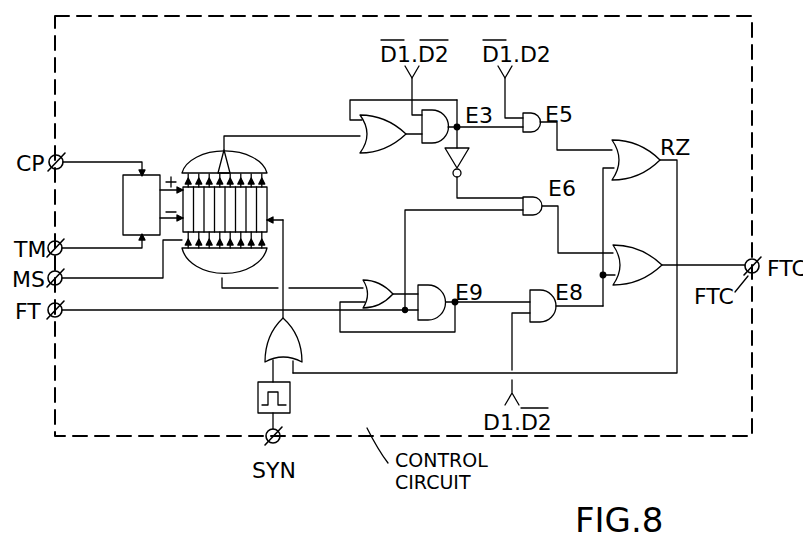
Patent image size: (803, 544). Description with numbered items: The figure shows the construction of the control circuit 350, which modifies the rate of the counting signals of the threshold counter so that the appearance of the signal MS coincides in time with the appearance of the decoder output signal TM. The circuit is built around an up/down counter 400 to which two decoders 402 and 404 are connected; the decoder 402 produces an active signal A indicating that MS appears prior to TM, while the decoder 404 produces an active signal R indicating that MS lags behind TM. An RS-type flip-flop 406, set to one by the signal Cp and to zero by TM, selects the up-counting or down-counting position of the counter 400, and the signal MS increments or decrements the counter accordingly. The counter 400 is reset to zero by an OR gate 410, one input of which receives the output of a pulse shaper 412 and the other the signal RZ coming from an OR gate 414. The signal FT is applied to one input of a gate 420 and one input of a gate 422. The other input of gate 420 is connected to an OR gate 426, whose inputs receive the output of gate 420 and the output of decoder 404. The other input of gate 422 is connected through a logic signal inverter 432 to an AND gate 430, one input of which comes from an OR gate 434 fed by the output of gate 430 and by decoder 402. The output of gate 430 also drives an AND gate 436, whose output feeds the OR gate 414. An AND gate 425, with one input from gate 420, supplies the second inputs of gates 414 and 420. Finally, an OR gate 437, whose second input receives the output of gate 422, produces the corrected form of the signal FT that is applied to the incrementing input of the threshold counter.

The control circuit 350 is at (142, 412).
The up/down counter 400 is at (269, 197).
The decoder 402 is at (206, 157).
The decoder 404 is at (216, 268).
The RS-type flip-flop 406 is at (123, 214).
The OR gate 410 is at (295, 345).
The pulse shaper 412 is at (258, 399).
The OR gate 414 is at (629, 146).
The gate 420 is at (432, 285).
The gate 422 is at (530, 194).
The AND gate 425 is at (549, 322).
The OR gate 426 is at (378, 282).
The AND gate 430 is at (423, 143).
The logic signal inverter 432 is at (466, 157).
The OR gate 434 is at (376, 143).
The AND gate 436 is at (530, 112).
The OR gate 437 is at (640, 251).